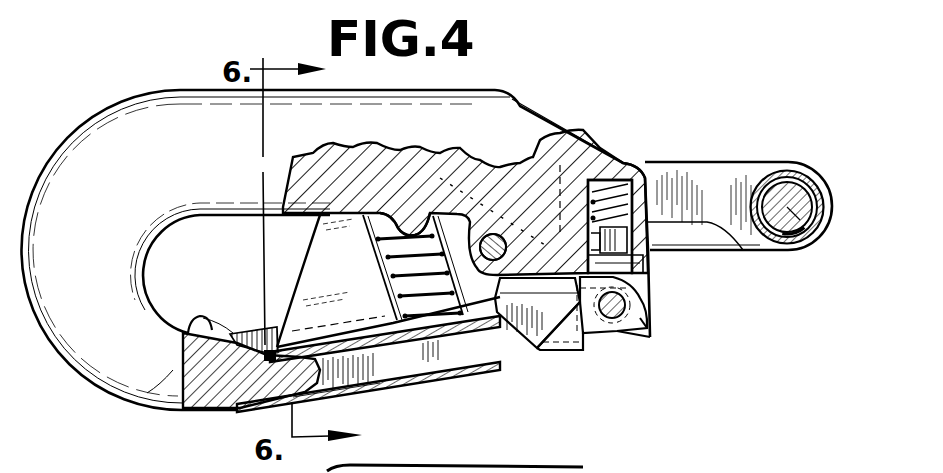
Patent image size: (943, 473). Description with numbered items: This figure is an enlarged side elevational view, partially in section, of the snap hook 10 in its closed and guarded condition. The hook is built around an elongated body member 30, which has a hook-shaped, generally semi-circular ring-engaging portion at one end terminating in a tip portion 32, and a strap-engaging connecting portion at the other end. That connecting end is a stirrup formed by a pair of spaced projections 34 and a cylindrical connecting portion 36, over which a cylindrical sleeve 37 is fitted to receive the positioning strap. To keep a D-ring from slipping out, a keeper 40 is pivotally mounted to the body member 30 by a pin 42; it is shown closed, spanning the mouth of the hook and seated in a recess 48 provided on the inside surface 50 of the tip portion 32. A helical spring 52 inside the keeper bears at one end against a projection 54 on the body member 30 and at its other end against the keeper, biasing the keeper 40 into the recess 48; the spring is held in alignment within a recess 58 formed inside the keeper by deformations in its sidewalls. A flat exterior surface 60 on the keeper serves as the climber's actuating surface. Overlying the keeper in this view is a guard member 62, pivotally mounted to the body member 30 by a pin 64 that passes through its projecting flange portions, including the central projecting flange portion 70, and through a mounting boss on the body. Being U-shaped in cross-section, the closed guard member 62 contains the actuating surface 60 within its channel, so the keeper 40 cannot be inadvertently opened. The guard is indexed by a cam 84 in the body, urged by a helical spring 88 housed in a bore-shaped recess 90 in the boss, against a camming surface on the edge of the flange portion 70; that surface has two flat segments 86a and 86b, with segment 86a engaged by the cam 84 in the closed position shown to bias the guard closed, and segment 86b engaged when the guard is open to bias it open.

The snap hook 10 is at (110, 87).
The body member 30 is at (316, 126).
The tip portion 32 is at (210, 397).
The spaced projections 34 is at (721, 173).
The cylindrical connecting portion 36 is at (802, 253).
The cylindrical sleeve 37 is at (797, 183).
The keeper 40 is at (323, 272).
The pin 42 is at (487, 240).
The recess 48 is at (167, 373).
The inside surface 50 is at (167, 330).
The helical spring 52 is at (443, 333).
The projection 54 is at (410, 223).
The recess 58 is at (537, 349).
The flat exterior surface 60 is at (397, 383).
The guard member 62 is at (418, 378).
The pin 64 is at (611, 318).
The central projecting flange portion 70 is at (630, 300).
The cam 84 is at (612, 258).
The flat segment 86a is at (633, 329).
The flat segment 86b is at (647, 332).
The helical spring 88 is at (742, 252).
The bore-shaped recess 90 is at (610, 193).